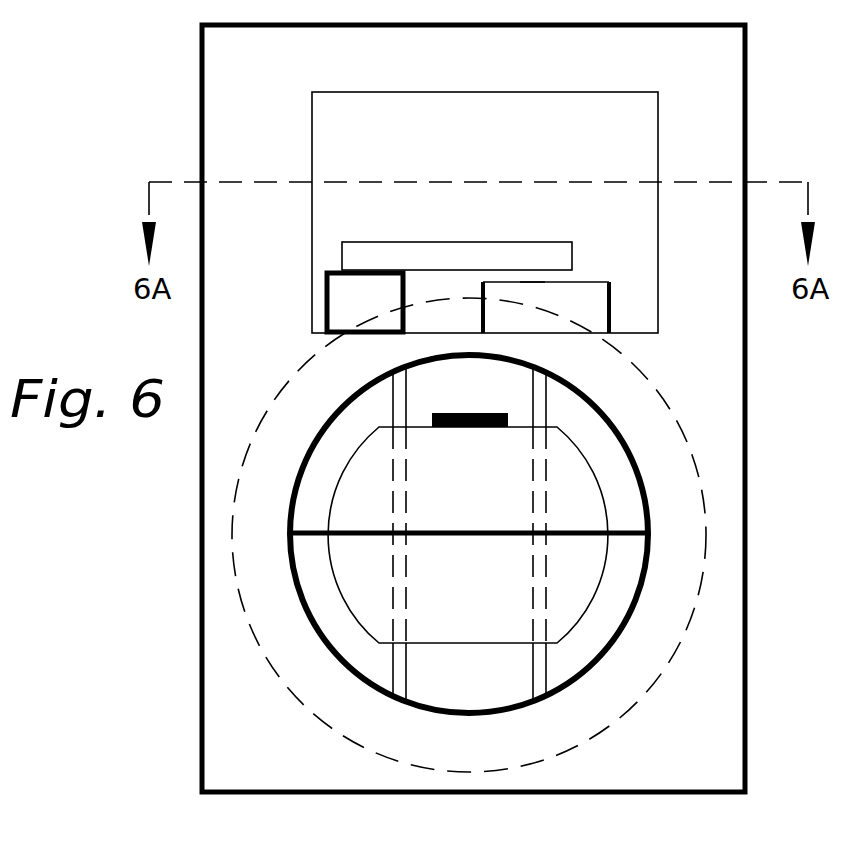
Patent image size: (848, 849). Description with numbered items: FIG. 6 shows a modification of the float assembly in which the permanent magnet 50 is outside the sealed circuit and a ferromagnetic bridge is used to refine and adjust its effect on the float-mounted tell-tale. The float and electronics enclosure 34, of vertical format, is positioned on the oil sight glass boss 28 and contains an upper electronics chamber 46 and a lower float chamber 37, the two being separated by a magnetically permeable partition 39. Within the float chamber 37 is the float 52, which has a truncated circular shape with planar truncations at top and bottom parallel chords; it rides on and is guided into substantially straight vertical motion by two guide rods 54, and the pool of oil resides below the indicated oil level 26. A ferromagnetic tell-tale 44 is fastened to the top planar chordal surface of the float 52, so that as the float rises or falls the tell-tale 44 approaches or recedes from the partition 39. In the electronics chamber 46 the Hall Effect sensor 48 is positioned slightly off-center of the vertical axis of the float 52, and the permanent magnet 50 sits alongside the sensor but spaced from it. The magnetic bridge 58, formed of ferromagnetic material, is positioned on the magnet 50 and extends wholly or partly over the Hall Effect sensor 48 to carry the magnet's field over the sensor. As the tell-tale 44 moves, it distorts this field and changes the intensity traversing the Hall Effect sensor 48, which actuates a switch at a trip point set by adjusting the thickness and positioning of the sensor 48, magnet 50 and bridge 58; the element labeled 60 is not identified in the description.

The float and electronics enclosure 34 is at (200, 155).
The electronics chamber 46 is at (485, 212).
The magnetic bridge 58 is at (405, 242).
The connector 60 is at (530, 276).
The Hall Effect sensor 48 is at (590, 282).
The permanent magnet 50 is at (327, 290).
The boss 28 is at (695, 460).
The float chamber 37 is at (318, 503).
The magnetically permeable partition 39 is at (452, 344).
The float 52 is at (468, 535).
The guide rods 54 is at (405, 662).
The oil level 26 is at (500, 533).
The ferromagnetic tell-tale 44 is at (492, 428).